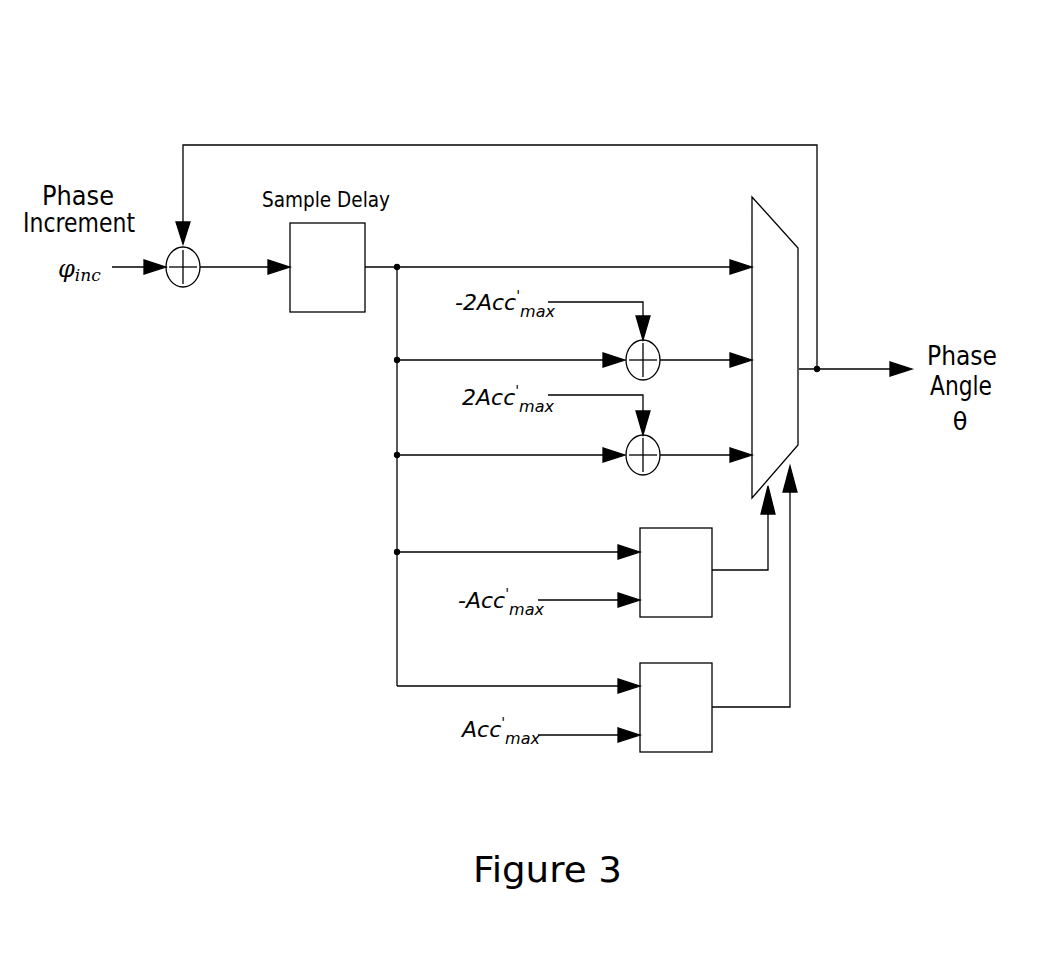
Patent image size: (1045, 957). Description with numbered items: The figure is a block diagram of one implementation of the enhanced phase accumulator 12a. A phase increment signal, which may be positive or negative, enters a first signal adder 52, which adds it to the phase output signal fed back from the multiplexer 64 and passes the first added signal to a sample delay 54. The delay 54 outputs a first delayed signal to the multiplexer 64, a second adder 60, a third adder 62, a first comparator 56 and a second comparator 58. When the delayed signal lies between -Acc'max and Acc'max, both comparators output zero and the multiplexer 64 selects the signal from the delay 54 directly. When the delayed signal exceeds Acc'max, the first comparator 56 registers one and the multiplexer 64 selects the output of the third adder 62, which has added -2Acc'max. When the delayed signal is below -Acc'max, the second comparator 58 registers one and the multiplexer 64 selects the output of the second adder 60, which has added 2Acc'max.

The enhanced phase accumulator 12a is at (956, 152).
The first signal adder 52 is at (183, 287).
The sample delay 54 is at (323, 312).
The first comparator 56 is at (712, 735).
The second comparator 58 is at (712, 600).
The second adder 60 is at (646, 474).
The third adder 62 is at (656, 346).
The multiplexer 64 is at (799, 430).